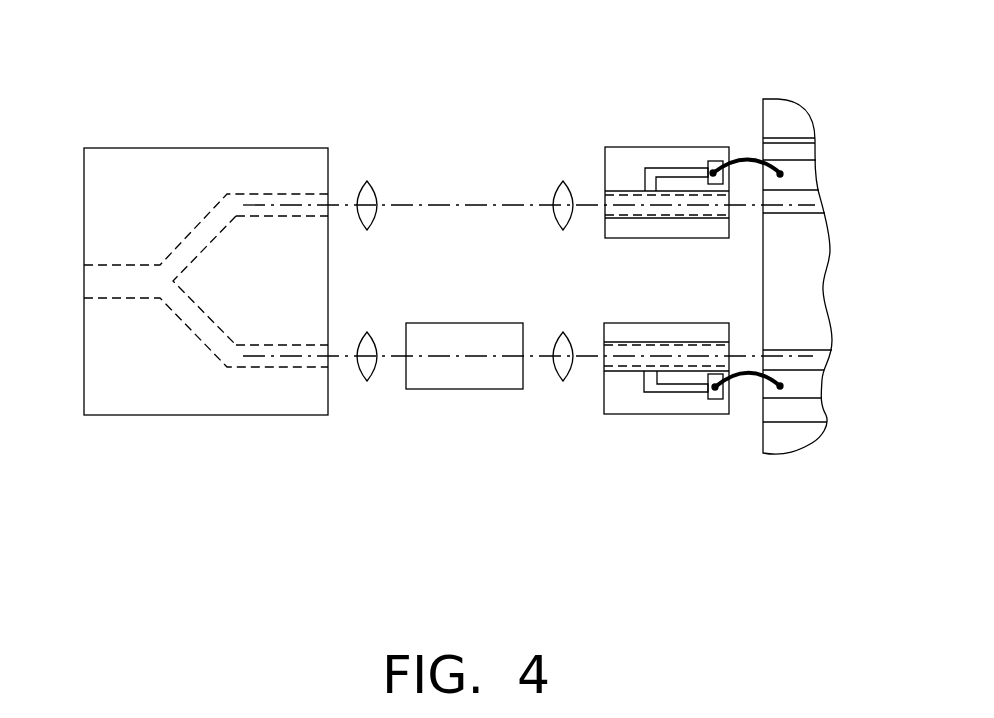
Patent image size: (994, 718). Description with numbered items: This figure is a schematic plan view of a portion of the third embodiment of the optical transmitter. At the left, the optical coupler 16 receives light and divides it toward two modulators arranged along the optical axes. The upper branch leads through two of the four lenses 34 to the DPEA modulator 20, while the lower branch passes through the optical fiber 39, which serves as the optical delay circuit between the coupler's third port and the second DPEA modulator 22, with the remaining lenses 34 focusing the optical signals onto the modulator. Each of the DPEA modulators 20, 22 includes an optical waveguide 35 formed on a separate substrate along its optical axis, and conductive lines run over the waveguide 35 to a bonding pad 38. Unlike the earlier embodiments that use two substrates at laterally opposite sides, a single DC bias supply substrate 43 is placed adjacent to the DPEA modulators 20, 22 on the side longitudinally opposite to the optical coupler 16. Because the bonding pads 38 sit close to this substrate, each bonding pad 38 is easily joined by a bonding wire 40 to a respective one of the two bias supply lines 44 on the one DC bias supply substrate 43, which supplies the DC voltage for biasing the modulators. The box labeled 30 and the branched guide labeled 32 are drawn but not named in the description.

The optical coupler 16 is at (115, 133).
The DPEA modulator 20 is at (627, 147).
The second DPEA modulator 22 is at (658, 415).
The optical coupler block 30 is at (208, 162).
The Y-branched optical waveguide 32 is at (113, 265).
The lens 34 is at (370, 183).
The optical waveguide 35 is at (651, 208).
The bonding pad 38 is at (718, 163).
The optical fiber 39 is at (474, 389).
The bonding wire 40 is at (746, 158).
The DC bias supply substrate 43 is at (790, 117).
The bias supply line 44 is at (803, 176).